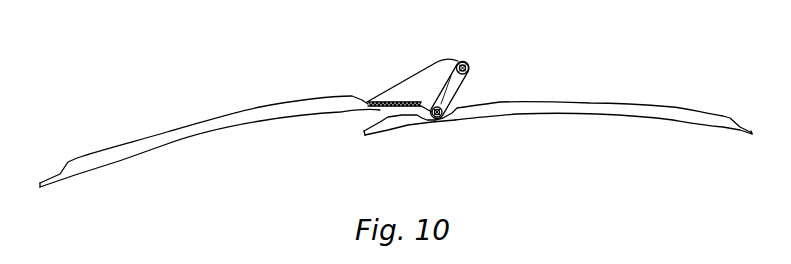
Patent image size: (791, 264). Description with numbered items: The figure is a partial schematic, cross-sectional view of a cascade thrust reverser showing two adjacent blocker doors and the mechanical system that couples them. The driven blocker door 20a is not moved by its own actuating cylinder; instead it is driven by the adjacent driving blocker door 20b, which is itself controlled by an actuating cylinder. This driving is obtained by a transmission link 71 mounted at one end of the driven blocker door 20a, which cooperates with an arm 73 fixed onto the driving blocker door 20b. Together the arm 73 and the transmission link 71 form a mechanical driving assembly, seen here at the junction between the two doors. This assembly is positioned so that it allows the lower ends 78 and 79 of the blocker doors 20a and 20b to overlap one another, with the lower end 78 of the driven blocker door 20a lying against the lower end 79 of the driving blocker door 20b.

The driven blocker door 20a is at (607, 105).
The driving blocker door 20b is at (232, 120).
The transmission link 71 is at (440, 98).
The arm 73 is at (433, 72).
The lower end of the driven blocker door 78 is at (402, 118).
The lower end of the driving blocker door 79 is at (378, 107).